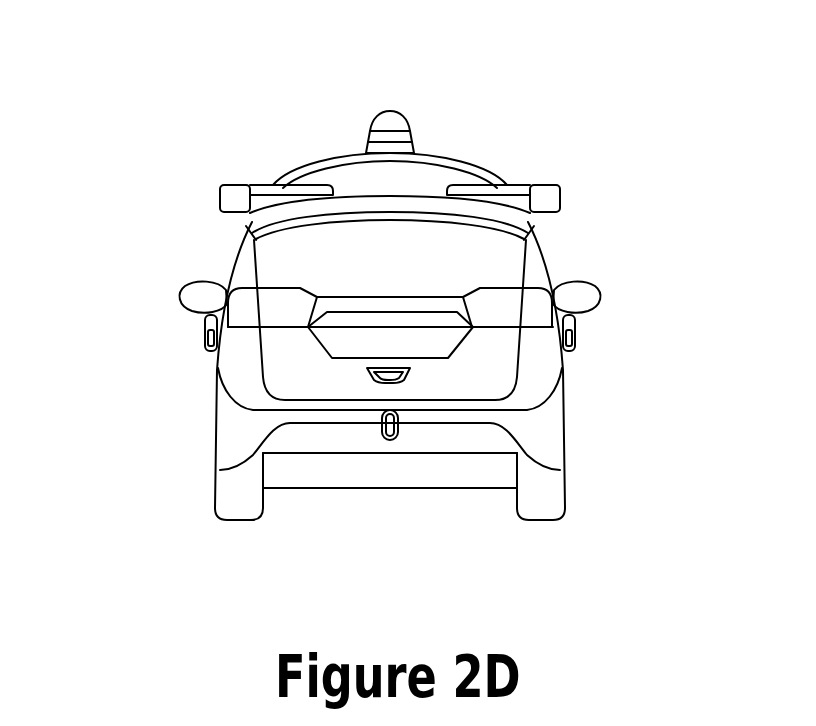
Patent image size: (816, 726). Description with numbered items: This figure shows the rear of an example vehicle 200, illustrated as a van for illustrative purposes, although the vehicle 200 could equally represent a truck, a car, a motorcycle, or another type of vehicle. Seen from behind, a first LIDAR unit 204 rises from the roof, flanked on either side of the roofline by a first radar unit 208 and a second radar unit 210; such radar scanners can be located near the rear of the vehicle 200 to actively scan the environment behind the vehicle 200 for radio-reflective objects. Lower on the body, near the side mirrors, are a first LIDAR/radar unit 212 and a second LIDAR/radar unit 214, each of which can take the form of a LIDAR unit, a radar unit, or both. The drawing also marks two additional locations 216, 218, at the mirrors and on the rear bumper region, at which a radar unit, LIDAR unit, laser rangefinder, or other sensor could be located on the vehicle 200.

The vehicle 200 is at (367, 294).
The first LIDAR unit 204 is at (358, 111).
The first radar unit 208 is at (231, 172).
The second radar unit 210 is at (545, 158).
The first LIDAR/radar unit 212 is at (165, 316).
The second LIDAR/radar unit 214 is at (611, 302).
The additional location 216 is at (400, 265).
The additional location 218 is at (416, 489).